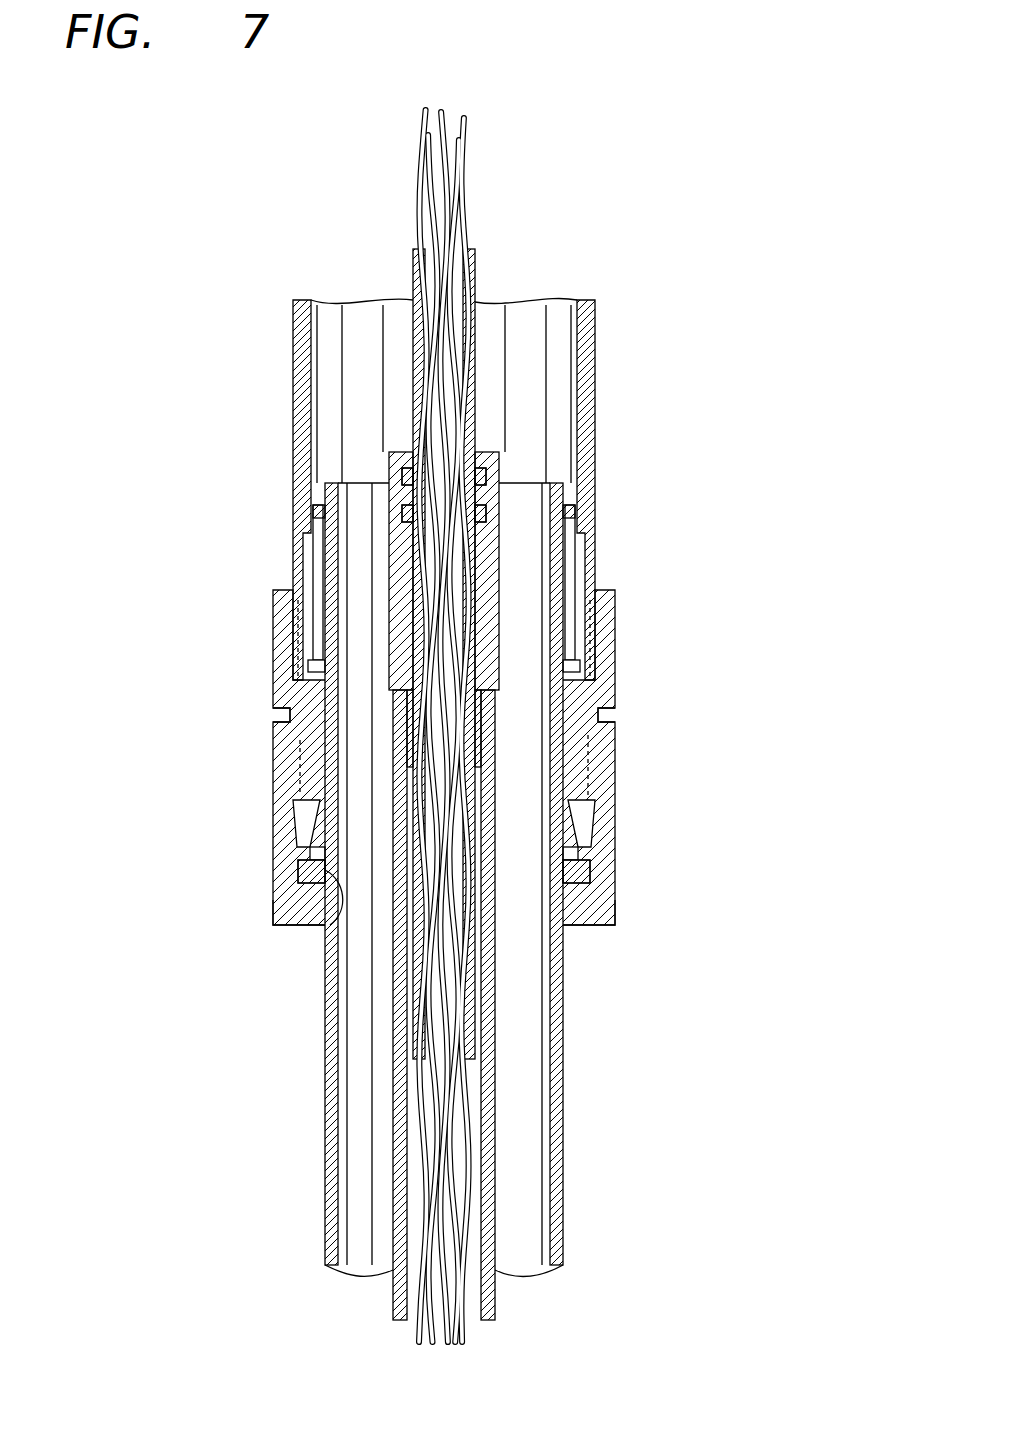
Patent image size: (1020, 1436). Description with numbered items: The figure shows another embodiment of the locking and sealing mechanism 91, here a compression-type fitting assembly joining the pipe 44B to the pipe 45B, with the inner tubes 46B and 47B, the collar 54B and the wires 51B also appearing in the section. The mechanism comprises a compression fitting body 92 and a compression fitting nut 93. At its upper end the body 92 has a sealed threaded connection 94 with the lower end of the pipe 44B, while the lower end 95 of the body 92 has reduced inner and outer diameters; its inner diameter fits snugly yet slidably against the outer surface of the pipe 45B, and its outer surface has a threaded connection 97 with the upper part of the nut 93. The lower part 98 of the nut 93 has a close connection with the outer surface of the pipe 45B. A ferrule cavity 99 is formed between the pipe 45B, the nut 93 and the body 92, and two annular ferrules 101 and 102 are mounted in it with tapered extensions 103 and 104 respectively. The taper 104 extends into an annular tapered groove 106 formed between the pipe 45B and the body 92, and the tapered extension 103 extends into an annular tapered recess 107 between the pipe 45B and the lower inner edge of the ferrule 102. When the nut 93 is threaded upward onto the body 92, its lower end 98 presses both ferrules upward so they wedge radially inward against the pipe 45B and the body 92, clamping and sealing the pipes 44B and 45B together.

The wires 51B is at (467, 168).
The inner tube 46B is at (477, 262).
The pipe 44B is at (593, 332).
The collar 54B is at (487, 453).
The sealed threaded connection 94 is at (593, 585).
The compression fitting body 92 is at (622, 631).
The lower end of the body 95 is at (600, 715).
The locking and sealing mechanism 91 is at (710, 743).
The threaded connection 97 is at (604, 755).
The ferrule cavity 99 is at (604, 814).
The compression fitting nut 93 is at (635, 900).
The lower part of the nut 98 is at (618, 927).
The pipe 45B is at (567, 1108).
The wire tube 47B is at (500, 1183).
The annular tapered groove 106 is at (297, 793).
The tapered extension 104 is at (307, 845).
The ferrule 102 is at (302, 852).
The annular tapered recess 107 is at (300, 852).
The ferrule 101 is at (275, 923).
The tapered extension 103 is at (337, 937).